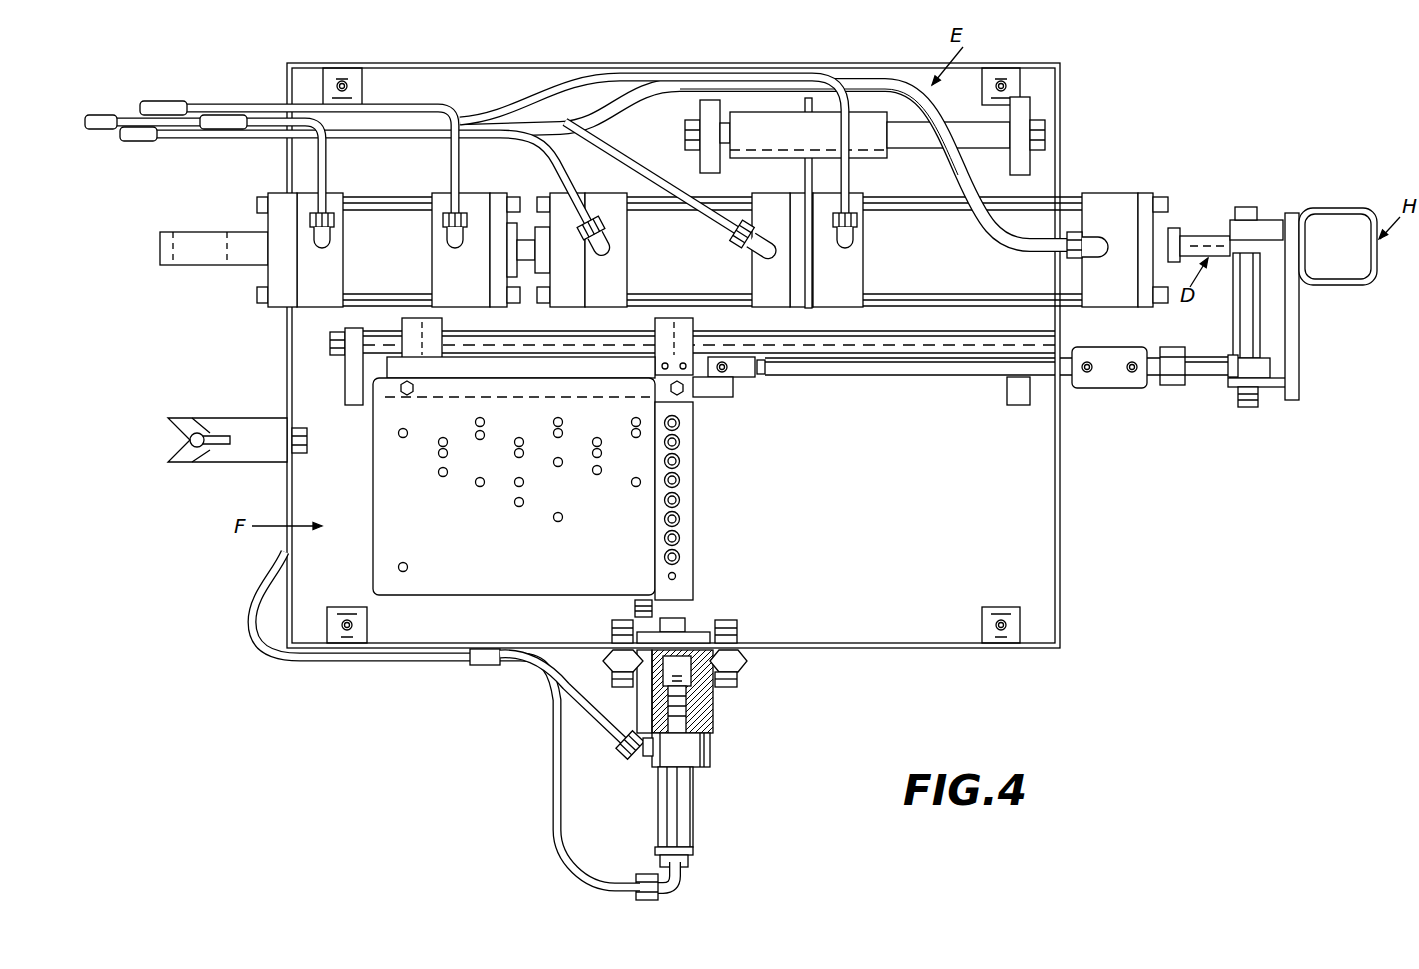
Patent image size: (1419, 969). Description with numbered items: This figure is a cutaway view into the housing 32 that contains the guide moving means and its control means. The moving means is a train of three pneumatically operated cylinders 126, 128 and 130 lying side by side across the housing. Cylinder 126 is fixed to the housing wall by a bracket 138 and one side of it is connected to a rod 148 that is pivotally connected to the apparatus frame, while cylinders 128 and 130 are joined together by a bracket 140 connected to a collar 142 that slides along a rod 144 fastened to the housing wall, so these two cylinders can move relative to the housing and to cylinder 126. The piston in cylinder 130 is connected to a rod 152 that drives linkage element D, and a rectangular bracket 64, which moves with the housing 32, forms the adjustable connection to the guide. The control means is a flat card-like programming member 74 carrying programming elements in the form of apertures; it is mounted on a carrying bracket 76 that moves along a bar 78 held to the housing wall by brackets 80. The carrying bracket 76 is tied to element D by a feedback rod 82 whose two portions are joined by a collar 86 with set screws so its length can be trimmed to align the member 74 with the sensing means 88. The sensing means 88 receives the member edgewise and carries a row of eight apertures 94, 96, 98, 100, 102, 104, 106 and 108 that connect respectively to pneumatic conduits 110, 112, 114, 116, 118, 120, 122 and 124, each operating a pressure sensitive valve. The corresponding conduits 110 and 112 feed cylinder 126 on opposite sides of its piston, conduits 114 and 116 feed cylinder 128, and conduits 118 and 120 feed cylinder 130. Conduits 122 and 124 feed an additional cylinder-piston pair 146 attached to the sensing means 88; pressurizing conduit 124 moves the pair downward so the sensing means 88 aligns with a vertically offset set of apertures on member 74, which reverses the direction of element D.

The housing 32 is at (1060, 511).
The rectangular bracket 64 is at (1350, 183).
The programming member 74 is at (443, 597).
The carrying bracket 76 is at (728, 388).
The bar 78 is at (953, 328).
The brackets 80 is at (1010, 395).
The feedback rod 82 is at (927, 368).
The collar 86 is at (1110, 386).
The sensing means 88 is at (690, 600).
The aperture 94 is at (680, 421).
The aperture 96 is at (680, 441).
The aperture 98 is at (680, 460).
The aperture 100 is at (680, 480).
The aperture 102 is at (680, 499).
The aperture 104 is at (680, 518).
The aperture 106 is at (680, 537).
The aperture 108 is at (680, 556).
The pneumatic conduit 110 is at (458, 157).
The pneumatic conduit 112 is at (325, 157).
The pneumatic conduit 114 is at (580, 170).
The pneumatic conduit 116 is at (722, 218).
The pneumatic conduit 118 is at (1030, 238).
The pneumatic conduit 120 is at (853, 205).
The pneumatic conduit 122 is at (563, 778).
The pneumatic conduit 124 is at (590, 711).
The cylinder 126 is at (388, 250).
The cylinder 128 is at (706, 250).
The cylinder 130 is at (1015, 250).
The bracket 138 is at (278, 300).
The bracket 140 is at (775, 295).
The collar 142 is at (788, 152).
The rod 144 is at (928, 143).
The cylinder-piston pair 146 is at (694, 818).
The rod 148 is at (221, 205).
The rod 152 is at (1174, 237).